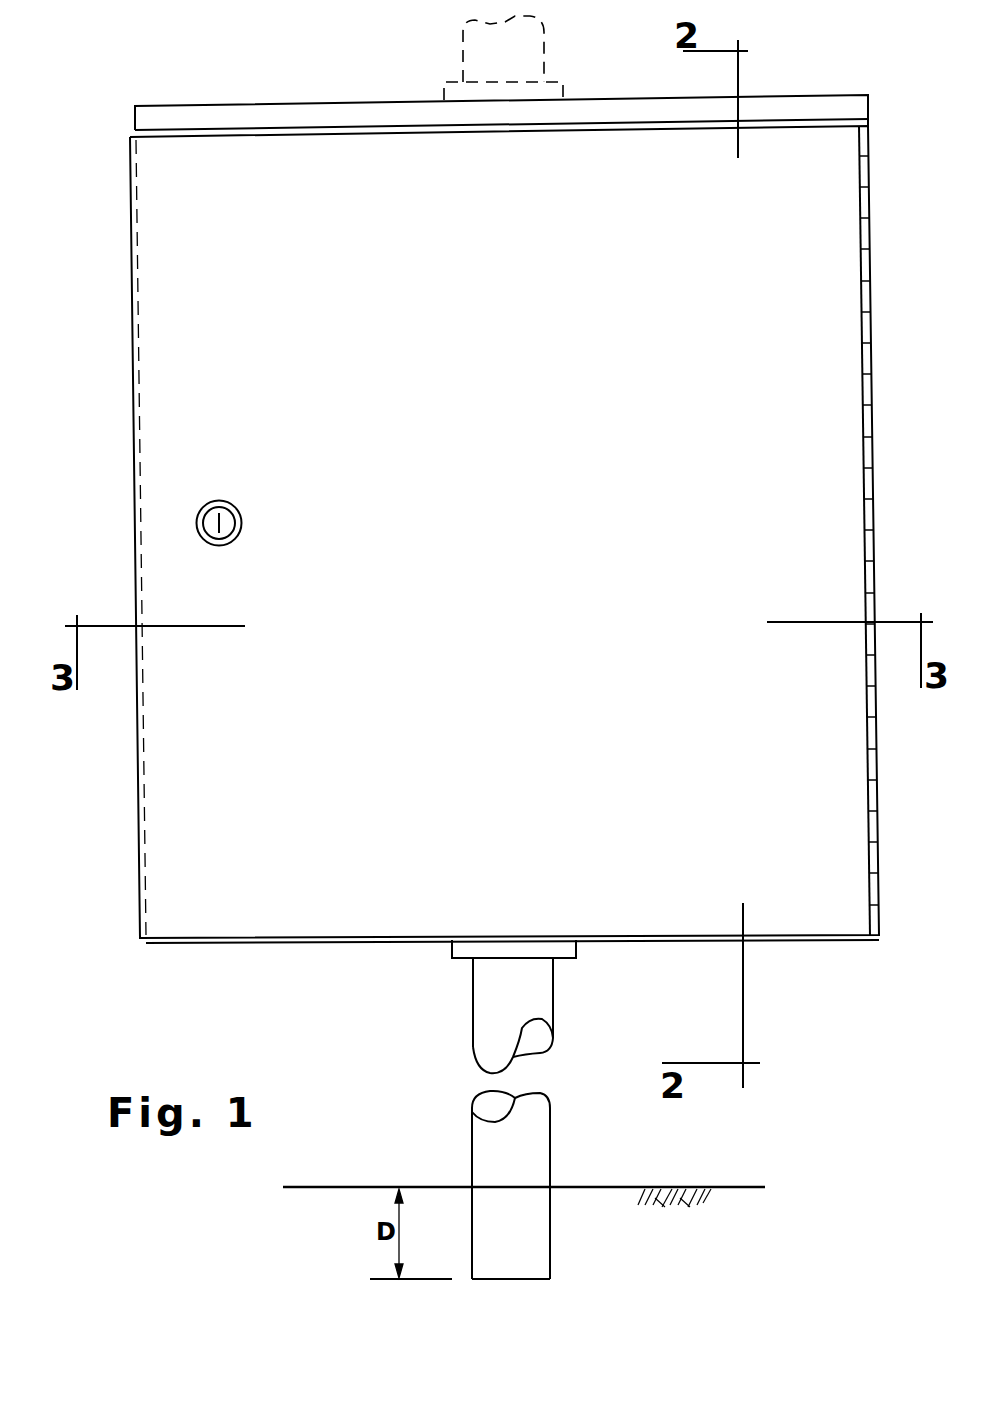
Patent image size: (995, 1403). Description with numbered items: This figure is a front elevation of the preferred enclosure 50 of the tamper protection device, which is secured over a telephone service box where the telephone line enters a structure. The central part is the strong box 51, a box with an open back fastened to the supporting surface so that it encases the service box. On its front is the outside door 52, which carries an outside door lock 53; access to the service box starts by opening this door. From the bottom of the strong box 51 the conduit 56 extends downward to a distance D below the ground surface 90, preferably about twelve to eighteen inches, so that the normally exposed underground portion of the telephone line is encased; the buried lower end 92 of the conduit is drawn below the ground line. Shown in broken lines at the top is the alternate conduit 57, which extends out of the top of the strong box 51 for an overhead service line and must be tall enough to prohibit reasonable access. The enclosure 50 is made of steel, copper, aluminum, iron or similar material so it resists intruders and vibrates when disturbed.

The enclosure 50 is at (792, 78).
The strong box 51 is at (297, 103).
The outside door 52 is at (726, 787).
The outside door lock 53 is at (206, 523).
The conduit 56 is at (553, 987).
The conduit 57 is at (543, 62).
The ground surface 90 is at (628, 1188).
The buried post end 92 is at (530, 1278).